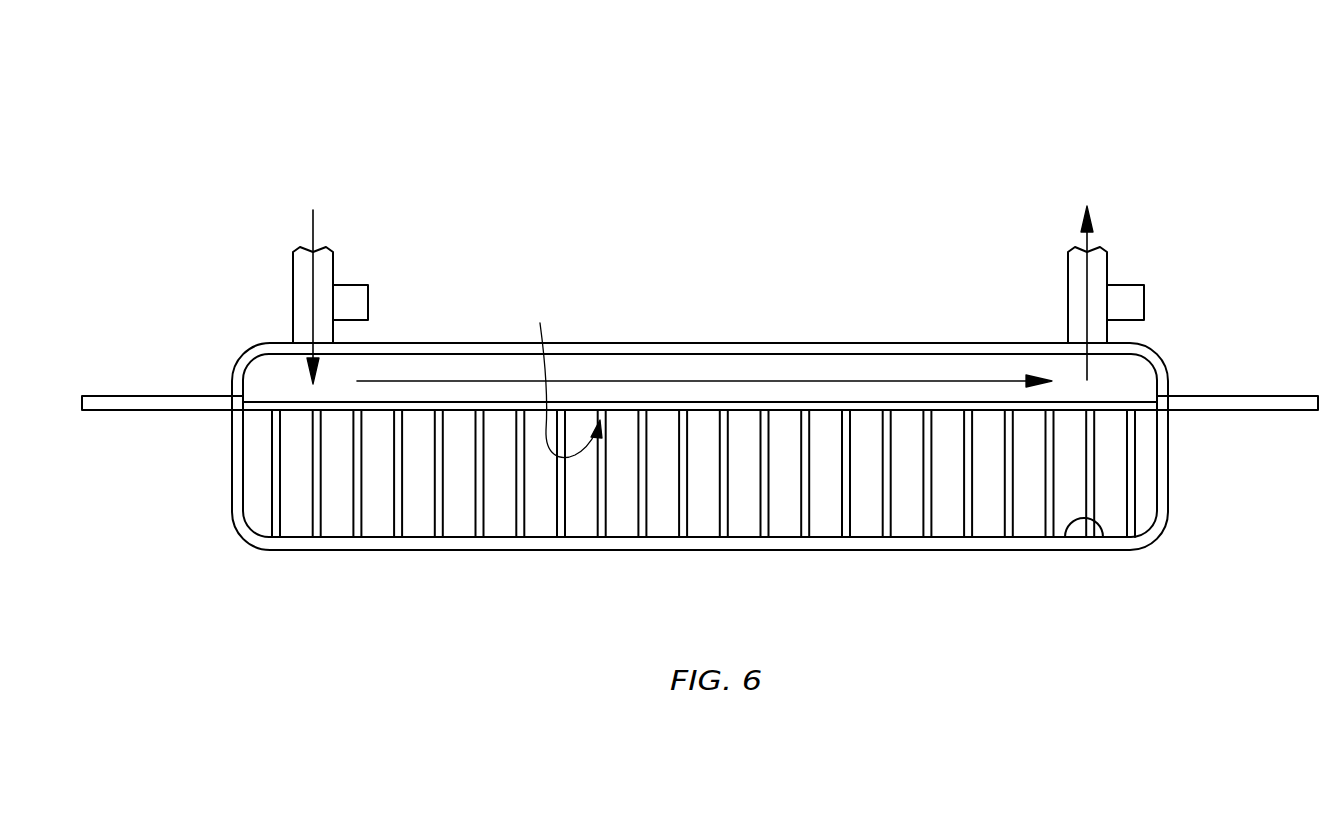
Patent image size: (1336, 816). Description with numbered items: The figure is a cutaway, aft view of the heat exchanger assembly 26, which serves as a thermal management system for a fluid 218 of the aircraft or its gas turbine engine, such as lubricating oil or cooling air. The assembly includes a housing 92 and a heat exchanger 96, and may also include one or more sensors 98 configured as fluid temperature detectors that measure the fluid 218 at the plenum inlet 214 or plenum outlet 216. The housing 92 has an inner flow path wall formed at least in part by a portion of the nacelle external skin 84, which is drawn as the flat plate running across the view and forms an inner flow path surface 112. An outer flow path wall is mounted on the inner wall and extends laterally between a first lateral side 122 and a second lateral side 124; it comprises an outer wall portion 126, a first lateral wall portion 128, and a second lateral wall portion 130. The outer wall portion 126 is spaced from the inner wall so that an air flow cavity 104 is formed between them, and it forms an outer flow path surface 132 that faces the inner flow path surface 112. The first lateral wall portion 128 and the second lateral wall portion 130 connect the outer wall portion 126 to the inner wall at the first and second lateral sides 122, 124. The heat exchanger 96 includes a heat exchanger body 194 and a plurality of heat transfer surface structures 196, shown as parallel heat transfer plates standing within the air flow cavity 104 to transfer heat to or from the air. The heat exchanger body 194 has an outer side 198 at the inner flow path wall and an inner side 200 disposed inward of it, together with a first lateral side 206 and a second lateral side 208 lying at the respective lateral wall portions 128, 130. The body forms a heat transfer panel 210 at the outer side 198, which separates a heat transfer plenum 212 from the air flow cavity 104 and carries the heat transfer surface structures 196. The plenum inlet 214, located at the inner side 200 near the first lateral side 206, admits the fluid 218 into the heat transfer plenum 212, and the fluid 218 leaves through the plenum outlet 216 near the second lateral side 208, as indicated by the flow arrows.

The heat exchanger assembly 26 is at (1253, 178).
The nacelle external skin 84 is at (1278, 396).
The housing 92 is at (1212, 520).
The heat exchanger 96 is at (412, 259).
The sensors 98 is at (370, 303).
The air flow cavity 104 is at (1065, 471).
The inner flow path surface 112 is at (302, 410).
The first lateral side 122 is at (207, 535).
The second lateral side 124 is at (1188, 487).
The outer wall portion 126 is at (426, 550).
The first lateral wall portion 128 is at (232, 482).
The second lateral wall portion 130 is at (1168, 440).
The outer flow path surface 132 is at (1101, 537).
The heat exchanger body 194 is at (995, 350).
The heat transfer surface structures 196 is at (965, 502).
The outer side 198 is at (559, 374).
The inner side 200 is at (625, 343).
The first lateral side 206 is at (222, 368).
The second lateral side 208 is at (1168, 348).
The heat transfer panel 210 is at (810, 400).
The heat transfer plenum 212 is at (880, 372).
The plenum inlet 214 is at (293, 295).
The plenum outlet 216 is at (1068, 272).
The fluid 218 is at (312, 227).